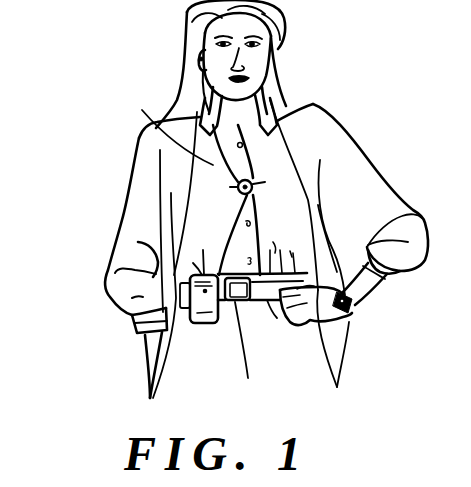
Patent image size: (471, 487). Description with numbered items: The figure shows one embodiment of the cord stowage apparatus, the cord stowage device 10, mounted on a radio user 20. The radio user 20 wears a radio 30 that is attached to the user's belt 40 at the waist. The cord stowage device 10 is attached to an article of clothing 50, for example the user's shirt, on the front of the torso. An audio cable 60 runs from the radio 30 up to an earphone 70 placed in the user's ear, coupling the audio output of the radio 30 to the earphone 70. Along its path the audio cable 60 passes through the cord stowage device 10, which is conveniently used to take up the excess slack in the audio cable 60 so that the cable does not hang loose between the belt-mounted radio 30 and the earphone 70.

The cord stowage device 10 is at (240, 191).
The radio user 20 is at (300, 104).
The radio 30 is at (181, 300).
The belt 40 is at (267, 300).
The article of clothing 50 is at (156, 126).
The audio cable 60 is at (237, 212).
The earphone 70 is at (198, 58).